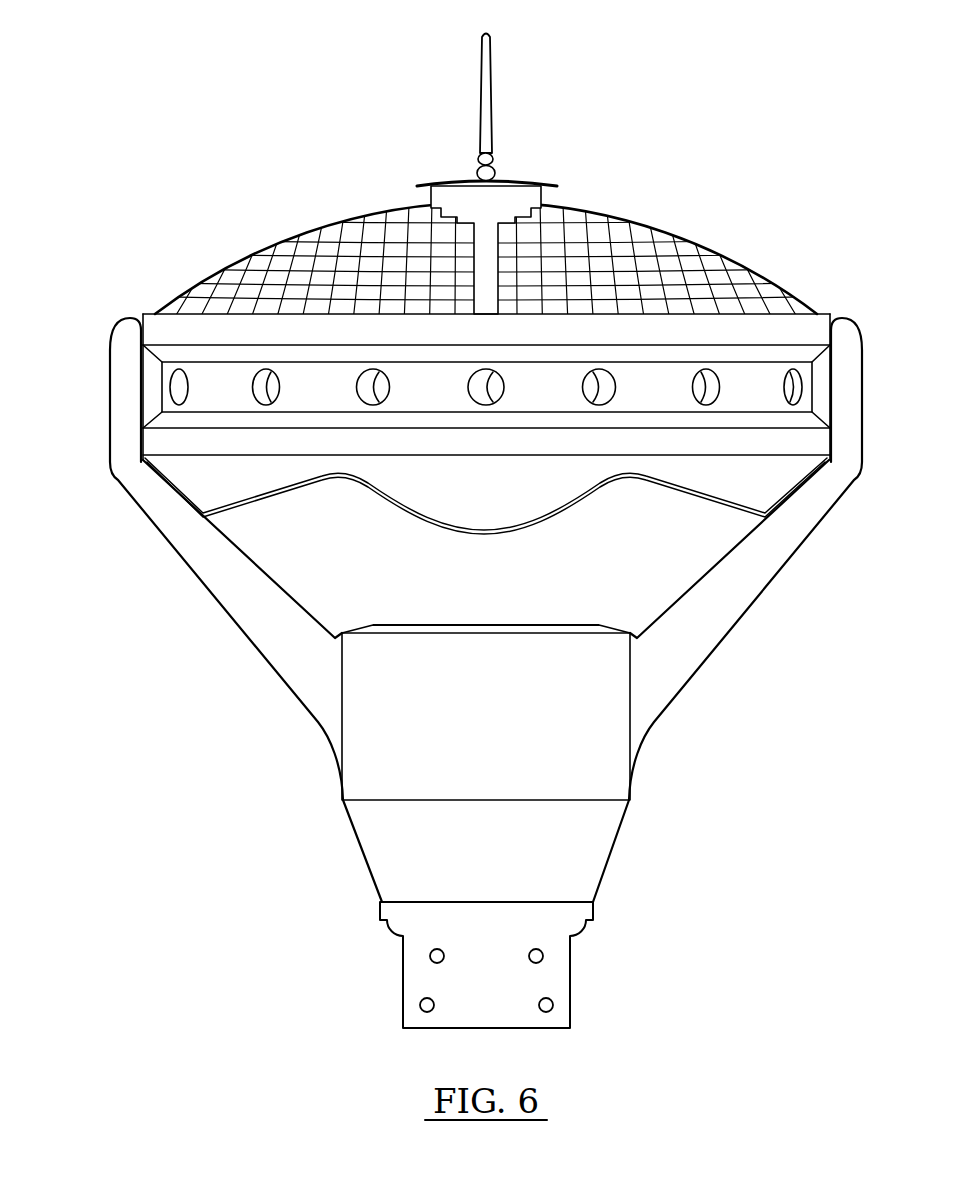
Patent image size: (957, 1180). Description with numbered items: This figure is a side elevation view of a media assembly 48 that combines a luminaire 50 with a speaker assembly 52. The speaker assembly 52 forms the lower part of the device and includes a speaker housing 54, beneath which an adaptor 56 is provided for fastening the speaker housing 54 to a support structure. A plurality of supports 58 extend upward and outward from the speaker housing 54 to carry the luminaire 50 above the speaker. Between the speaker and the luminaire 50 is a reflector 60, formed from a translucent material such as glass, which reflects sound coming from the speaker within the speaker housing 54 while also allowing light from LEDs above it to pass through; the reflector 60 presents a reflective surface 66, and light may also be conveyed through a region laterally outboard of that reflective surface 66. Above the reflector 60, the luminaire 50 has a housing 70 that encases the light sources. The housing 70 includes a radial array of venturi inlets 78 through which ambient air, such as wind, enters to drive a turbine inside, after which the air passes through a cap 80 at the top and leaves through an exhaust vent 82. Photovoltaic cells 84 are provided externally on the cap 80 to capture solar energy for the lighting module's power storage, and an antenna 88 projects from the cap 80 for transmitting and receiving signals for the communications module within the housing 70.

The media assembly 48 is at (214, 72).
The luminaire 50 is at (168, 493).
The speaker assembly 52 is at (341, 800).
The speaker housing 54 is at (342, 727).
The adaptor 56 is at (403, 972).
The supports 58 is at (181, 557).
The reflector 60 is at (307, 483).
The reflective surface 66 is at (340, 480).
The housing 70 is at (137, 438).
The venturi inlets 78 is at (180, 388).
The cap 80 is at (218, 266).
The exhaust vent 82 is at (432, 192).
The photovoltaic cells 84 is at (293, 240).
The antenna 88 is at (480, 117).